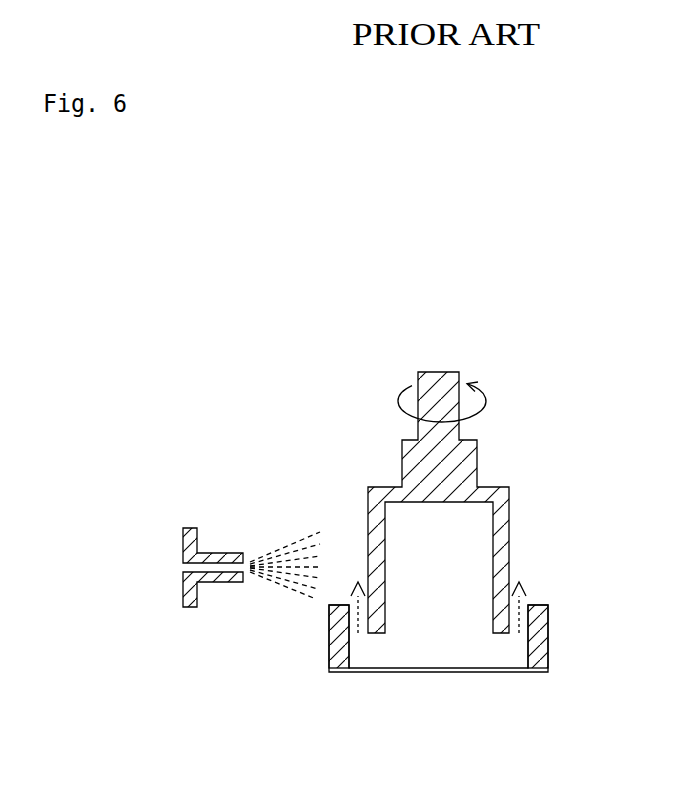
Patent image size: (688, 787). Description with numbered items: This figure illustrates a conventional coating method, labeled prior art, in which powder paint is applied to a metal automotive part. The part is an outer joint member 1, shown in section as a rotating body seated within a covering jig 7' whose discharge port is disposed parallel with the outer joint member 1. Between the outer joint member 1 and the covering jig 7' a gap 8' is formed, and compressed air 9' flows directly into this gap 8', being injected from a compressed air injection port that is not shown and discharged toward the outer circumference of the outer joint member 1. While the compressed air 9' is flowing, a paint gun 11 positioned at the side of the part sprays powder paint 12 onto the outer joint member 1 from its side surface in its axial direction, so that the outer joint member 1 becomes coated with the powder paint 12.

The outer joint member 1 is at (383, 412).
The paint gun 11 is at (218, 553).
The powder paint 12 is at (285, 555).
The covering jig 7' is at (467, 638).
The gap 8' is at (548, 597).
The compressed air 9' is at (468, 575).